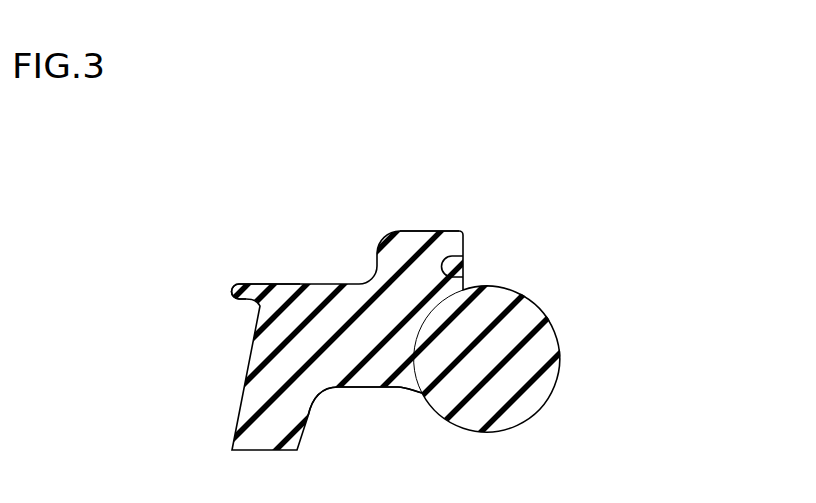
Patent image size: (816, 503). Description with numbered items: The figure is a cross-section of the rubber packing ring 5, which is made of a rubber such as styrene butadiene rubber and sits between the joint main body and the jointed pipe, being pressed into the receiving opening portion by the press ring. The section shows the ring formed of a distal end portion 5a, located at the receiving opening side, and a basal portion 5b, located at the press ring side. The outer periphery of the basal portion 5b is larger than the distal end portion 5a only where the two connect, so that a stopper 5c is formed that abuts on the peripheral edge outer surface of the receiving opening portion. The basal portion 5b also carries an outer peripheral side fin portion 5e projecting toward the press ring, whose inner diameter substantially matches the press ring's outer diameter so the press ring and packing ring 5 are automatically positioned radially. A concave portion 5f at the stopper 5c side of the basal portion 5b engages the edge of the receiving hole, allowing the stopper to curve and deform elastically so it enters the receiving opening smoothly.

The packing ring 5 is at (388, 233).
The distal end portion 5a is at (552, 340).
The basal portion 5b is at (345, 355).
The stopper 5c is at (439, 231).
The outer peripheral side fin portion 5e is at (245, 284).
The concave portion 5f is at (458, 267).